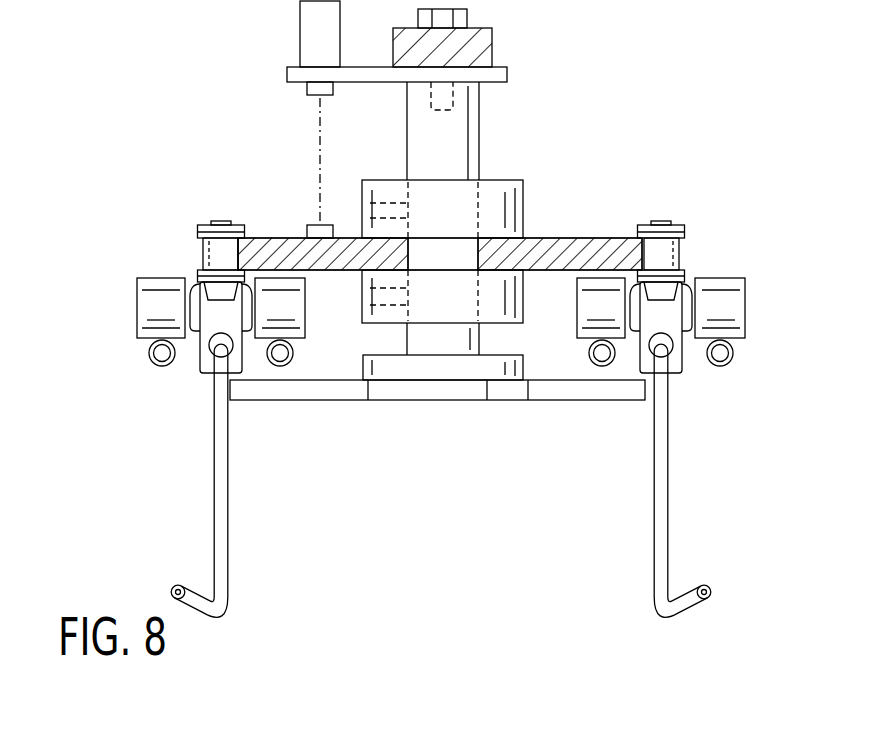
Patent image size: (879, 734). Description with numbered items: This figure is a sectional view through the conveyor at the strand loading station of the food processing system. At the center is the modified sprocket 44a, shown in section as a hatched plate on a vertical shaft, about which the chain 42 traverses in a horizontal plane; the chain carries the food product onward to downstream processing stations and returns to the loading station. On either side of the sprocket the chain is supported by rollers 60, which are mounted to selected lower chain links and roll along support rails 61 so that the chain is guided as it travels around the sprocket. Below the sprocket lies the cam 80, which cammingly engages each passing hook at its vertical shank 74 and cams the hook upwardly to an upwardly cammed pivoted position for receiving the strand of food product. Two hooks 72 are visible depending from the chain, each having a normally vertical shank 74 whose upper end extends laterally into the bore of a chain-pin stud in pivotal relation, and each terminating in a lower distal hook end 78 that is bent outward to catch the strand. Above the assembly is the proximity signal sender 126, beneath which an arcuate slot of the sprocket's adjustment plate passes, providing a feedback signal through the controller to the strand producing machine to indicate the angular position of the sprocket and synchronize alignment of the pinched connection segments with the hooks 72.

The proximity signal sender 126 is at (300, 25).
The chain 42 is at (197, 228).
The modified sprocket 44a is at (571, 238).
The roller 60 is at (738, 318).
The support rail 61 is at (737, 358).
The cam 80 is at (435, 393).
The vertical shank 74 is at (662, 505).
The hook 72 is at (659, 594).
The lower distal hook end 78 is at (701, 601).